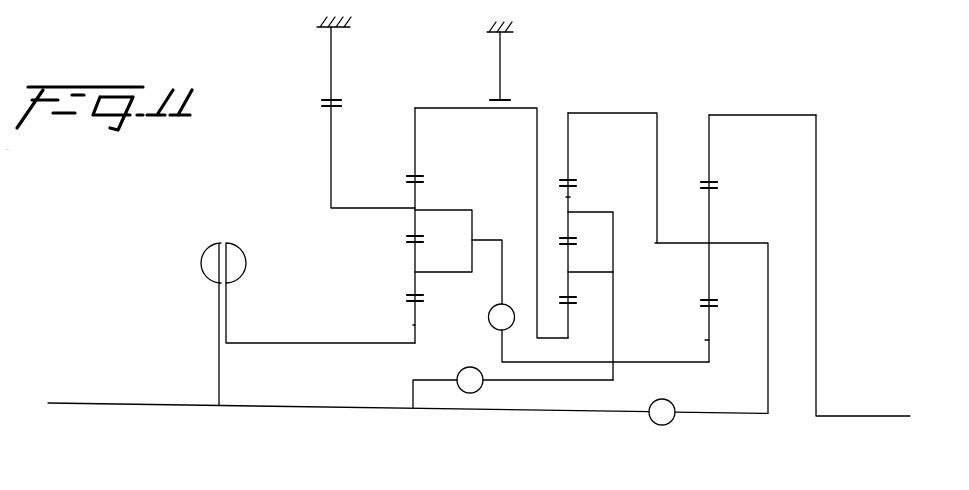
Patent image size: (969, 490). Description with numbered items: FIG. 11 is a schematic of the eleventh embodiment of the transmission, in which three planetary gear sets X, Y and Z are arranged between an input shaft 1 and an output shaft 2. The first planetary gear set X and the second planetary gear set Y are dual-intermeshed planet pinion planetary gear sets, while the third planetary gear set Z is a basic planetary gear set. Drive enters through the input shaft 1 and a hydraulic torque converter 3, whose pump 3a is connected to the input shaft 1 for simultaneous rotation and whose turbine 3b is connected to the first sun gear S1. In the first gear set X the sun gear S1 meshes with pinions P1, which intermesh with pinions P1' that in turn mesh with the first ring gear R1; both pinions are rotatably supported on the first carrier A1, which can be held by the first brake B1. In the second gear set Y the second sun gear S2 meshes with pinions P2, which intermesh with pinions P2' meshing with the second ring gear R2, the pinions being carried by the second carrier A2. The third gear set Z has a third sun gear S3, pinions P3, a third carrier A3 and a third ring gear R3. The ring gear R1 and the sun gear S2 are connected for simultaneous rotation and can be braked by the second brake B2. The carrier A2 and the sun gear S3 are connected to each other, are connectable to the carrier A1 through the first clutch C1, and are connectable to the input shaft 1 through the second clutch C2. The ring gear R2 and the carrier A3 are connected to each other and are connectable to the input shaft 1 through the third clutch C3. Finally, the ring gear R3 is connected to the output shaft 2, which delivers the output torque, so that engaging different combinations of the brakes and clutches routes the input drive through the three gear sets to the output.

The input shaft 1 is at (105, 404).
The output shaft 2 is at (850, 416).
The hydraulic torque converter 3 is at (266, 320).
The pump 3a is at (207, 280).
The turbine 3b is at (240, 280).
The first brake B1 is at (329, 96).
The second brake B2 is at (505, 98).
The first planetary gear set X is at (456, 196).
The second planetary gear set Y is at (607, 211).
The third planetary gear set Z is at (735, 235).
The first ring gear R1 is at (417, 151).
The second ring gear R2 is at (570, 152).
The third ring gear R3 is at (711, 149).
The pinion P1' is at (388, 230).
The pinion P1 is at (383, 288).
The pinion P2' is at (593, 194).
The pinion P2 is at (583, 256).
The pinion P3 is at (707, 266).
The first sun gear S1 is at (413, 325).
The second sun gear S2 is at (570, 331).
The third sun gear S3 is at (707, 340).
The first carrier A1 is at (458, 257).
The second carrier A2 is at (615, 297).
The third carrier A3 is at (770, 293).
The first clutch C1 is at (509, 305).
The second clutch C2 is at (462, 368).
The third clutch C3 is at (672, 422).